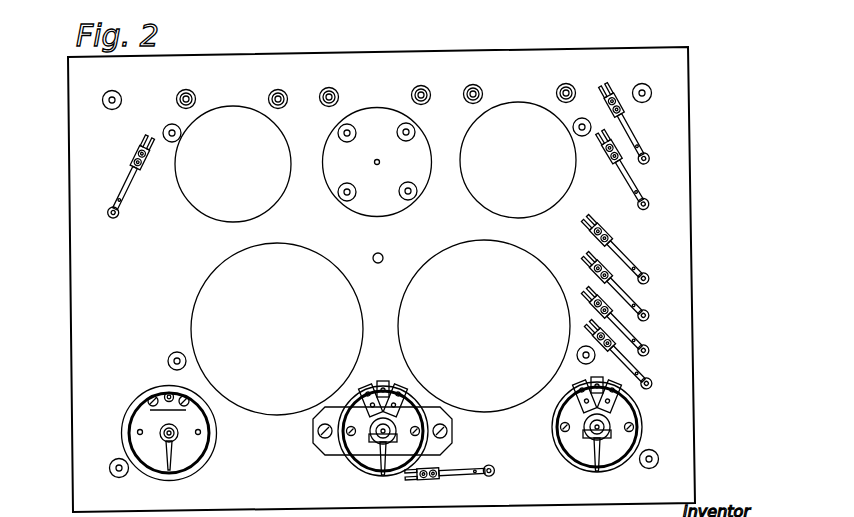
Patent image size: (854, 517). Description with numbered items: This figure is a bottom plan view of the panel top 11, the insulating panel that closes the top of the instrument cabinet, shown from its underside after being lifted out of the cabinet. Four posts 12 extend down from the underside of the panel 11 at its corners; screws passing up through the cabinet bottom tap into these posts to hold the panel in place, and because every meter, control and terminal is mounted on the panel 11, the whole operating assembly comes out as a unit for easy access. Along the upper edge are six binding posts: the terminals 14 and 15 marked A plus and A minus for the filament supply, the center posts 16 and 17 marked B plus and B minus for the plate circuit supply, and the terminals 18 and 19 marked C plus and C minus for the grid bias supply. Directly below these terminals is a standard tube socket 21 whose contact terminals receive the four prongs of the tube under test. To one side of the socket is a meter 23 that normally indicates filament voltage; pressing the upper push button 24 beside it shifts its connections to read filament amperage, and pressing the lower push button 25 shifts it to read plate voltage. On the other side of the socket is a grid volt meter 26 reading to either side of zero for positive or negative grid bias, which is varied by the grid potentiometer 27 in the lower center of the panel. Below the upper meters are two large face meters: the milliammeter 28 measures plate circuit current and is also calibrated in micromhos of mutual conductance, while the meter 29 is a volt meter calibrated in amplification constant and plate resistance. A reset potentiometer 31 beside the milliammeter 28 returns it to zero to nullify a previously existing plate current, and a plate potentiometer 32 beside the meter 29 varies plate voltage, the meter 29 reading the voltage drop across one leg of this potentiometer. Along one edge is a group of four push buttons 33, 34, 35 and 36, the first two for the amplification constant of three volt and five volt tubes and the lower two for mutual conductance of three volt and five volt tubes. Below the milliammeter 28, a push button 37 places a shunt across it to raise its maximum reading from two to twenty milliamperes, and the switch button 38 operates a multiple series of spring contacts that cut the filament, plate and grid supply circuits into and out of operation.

The panel top 11 is at (70, 237).
The posts 12 is at (102, 100).
The terminal 14 is at (565, 83).
The terminal 15 is at (472, 84).
The center post 16 is at (420, 85).
The center post 17 is at (329, 87).
The terminal 18 is at (276, 89).
The terminal 19 is at (188, 89).
The tube socket 21 is at (333, 137).
The meter 23 is at (478, 200).
The push button 24 is at (647, 158).
The push button 25 is at (649, 203).
The grid volt meter 26 is at (273, 192).
The grid potentiometer 27 is at (364, 459).
The milliammeter 28 is at (519, 254).
The meter 29 is at (199, 293).
The reset potentiometer 31 is at (586, 460).
The plate potentiometer 32 is at (190, 445).
The push button 33 is at (651, 282).
The push button 34 is at (653, 317).
The push button 35 is at (655, 352).
The push button 36 is at (655, 387).
The push button 37 is at (498, 472).
The button 38 is at (113, 219).